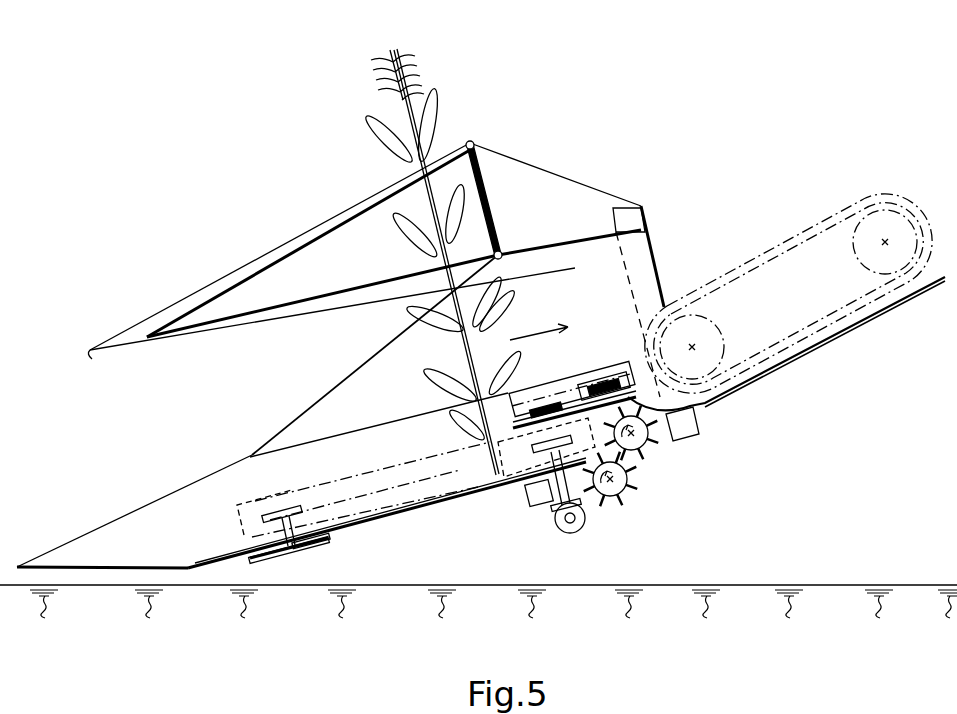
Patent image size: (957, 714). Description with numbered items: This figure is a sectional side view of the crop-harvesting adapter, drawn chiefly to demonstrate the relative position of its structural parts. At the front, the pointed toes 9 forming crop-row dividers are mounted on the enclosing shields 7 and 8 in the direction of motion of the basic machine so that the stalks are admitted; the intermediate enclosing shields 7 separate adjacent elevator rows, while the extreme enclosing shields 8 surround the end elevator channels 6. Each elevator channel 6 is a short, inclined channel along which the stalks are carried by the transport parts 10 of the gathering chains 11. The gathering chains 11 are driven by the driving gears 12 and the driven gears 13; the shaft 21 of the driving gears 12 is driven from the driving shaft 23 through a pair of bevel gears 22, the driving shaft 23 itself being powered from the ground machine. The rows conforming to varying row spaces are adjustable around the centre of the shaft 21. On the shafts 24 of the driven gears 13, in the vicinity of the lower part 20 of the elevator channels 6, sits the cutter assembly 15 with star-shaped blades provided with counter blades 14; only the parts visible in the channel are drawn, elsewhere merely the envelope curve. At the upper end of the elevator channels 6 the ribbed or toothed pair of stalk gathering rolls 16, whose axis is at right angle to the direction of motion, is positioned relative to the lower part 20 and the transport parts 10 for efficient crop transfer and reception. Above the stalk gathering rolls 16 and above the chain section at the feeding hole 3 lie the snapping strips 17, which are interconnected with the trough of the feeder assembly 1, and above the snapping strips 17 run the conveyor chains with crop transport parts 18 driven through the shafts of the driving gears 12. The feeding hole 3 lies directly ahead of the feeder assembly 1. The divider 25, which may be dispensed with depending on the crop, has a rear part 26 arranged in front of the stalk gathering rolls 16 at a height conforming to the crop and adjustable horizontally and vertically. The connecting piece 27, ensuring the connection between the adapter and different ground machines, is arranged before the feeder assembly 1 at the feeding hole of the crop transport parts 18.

The feeder assembly 1 is at (767, 353).
The feeding hole 3 is at (680, 397).
The elevator channel 6 is at (472, 487).
The enclosing shield 7 is at (400, 430).
The enclosing shield 8 is at (402, 355).
The pointed toe 9 is at (113, 540).
The transport part 10 is at (395, 463).
The gathering chain 11 is at (352, 495).
The driving gear 12 is at (532, 450).
The driven gear 13 is at (273, 517).
The counter blade 14 is at (320, 547).
The cutter assembly 15 is at (263, 560).
The pair of stalk gathering rolls 16 is at (650, 440).
The snapping strip 17 is at (575, 402).
The crop transport part 18 is at (518, 403).
The lower part 20 is at (420, 512).
The shaft 21 is at (553, 480).
The pair of bevel gears 22 is at (558, 507).
The driving shaft 23 is at (582, 522).
The shaft 24 is at (258, 537).
The divider 25 is at (245, 273).
The rear part 26 is at (483, 162).
The connecting piece 27 is at (644, 262).